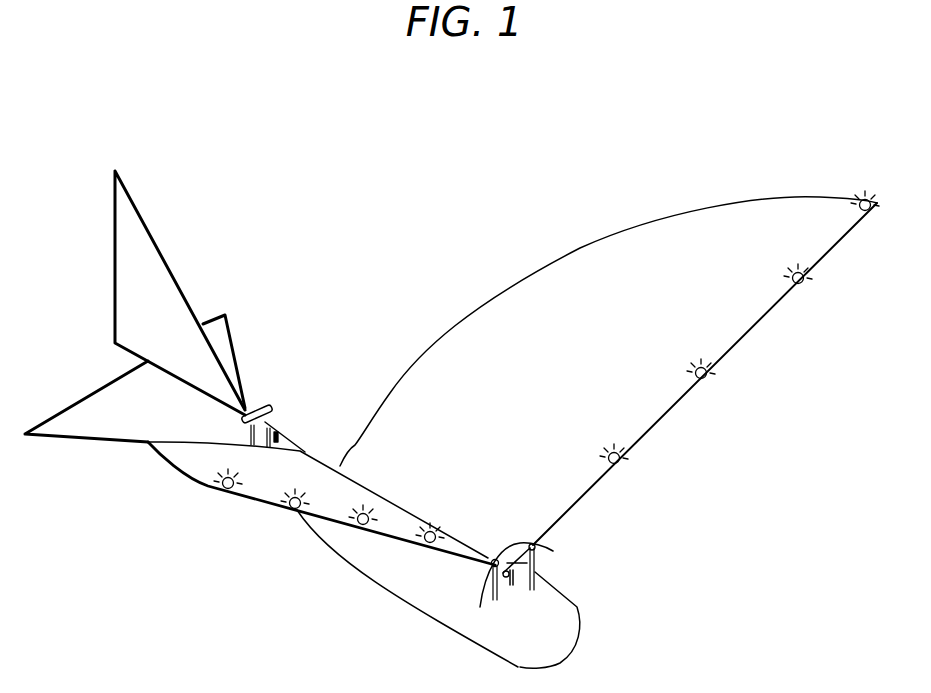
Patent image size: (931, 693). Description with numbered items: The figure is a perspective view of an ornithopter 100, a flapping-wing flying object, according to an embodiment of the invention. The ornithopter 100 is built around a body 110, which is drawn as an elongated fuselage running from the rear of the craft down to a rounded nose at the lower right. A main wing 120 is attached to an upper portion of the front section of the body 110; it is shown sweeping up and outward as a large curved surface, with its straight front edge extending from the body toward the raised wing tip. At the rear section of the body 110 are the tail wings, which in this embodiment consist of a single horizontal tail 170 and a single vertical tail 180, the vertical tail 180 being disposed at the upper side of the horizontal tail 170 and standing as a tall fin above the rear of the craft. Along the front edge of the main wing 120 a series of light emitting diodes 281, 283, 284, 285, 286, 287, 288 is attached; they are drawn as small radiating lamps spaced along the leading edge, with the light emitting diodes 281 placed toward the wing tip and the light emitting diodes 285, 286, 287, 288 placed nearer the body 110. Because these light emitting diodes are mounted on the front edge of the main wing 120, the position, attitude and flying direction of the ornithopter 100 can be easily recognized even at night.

The ornithopter 100 is at (529, 164).
The body 110 is at (567, 618).
The main wing 120 is at (667, 407).
The horizontal tail 170 is at (77, 428).
The vertical tail 180 is at (162, 273).
The light emitting diode 281 is at (868, 214).
The light emitting diode 283 is at (707, 376).
The light emitting diode 284 is at (620, 467).
The light emitting diode 285 is at (426, 546).
The light emitting diode 286 is at (358, 526).
The light emitting diode 287 is at (292, 511).
The light emitting diode 288 is at (222, 490).